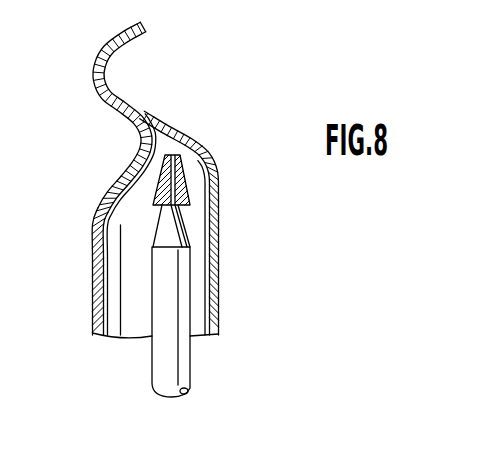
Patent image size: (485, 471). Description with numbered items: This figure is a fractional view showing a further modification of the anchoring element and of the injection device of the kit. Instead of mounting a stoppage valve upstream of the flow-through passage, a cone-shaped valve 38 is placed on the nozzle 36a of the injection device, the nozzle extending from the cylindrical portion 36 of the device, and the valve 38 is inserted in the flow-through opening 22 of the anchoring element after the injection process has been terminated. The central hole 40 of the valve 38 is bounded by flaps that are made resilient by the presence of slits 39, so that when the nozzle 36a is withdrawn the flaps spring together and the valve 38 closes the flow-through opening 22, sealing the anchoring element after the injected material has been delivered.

The flow-through opening 22 is at (178, 128).
The injection device nozzle body 36 is at (167, 307).
The nozzle 36a is at (170, 231).
The cone-shaped valve 38 is at (190, 188).
The slits 39 is at (158, 198).
The central hole 40 is at (160, 167).